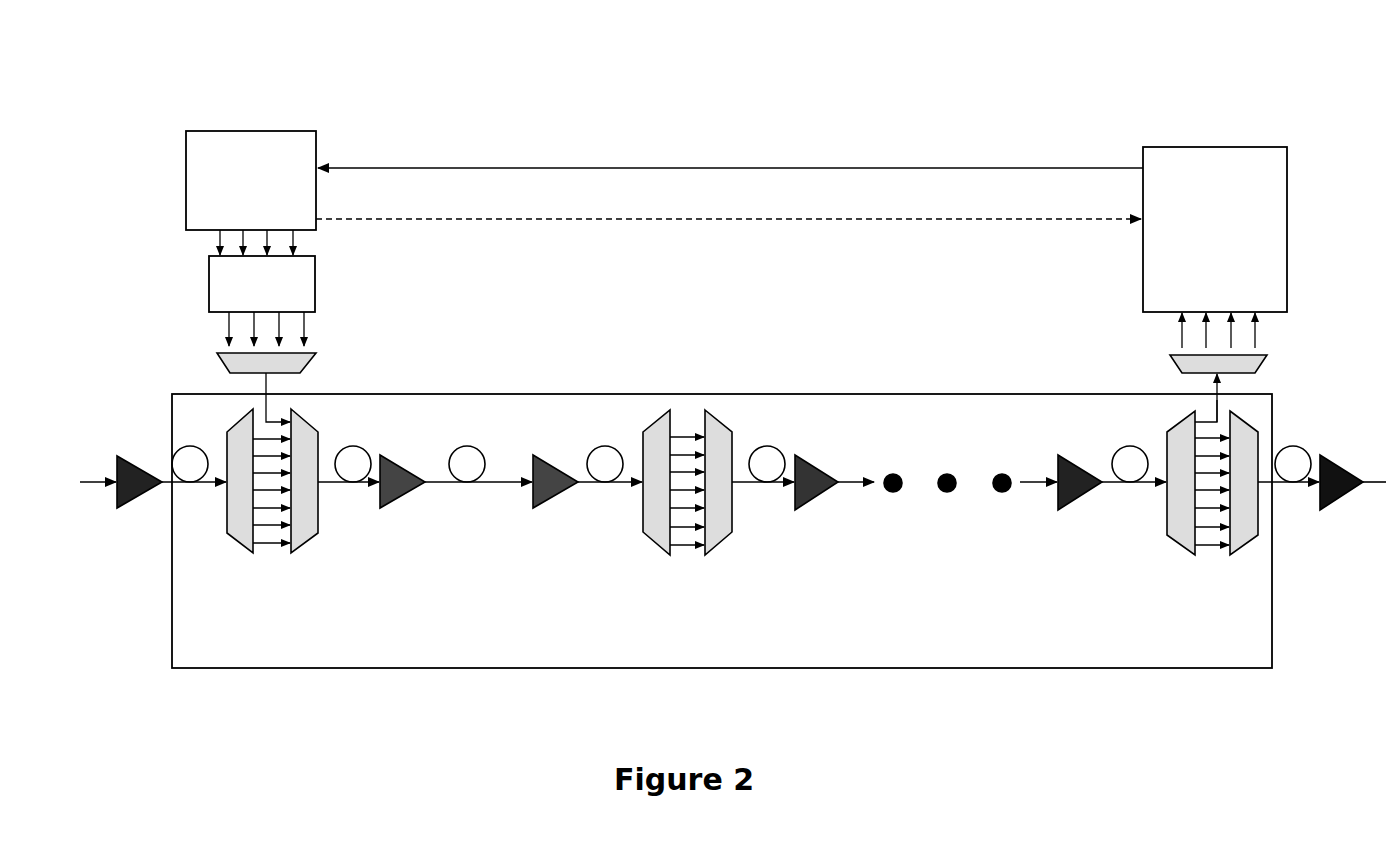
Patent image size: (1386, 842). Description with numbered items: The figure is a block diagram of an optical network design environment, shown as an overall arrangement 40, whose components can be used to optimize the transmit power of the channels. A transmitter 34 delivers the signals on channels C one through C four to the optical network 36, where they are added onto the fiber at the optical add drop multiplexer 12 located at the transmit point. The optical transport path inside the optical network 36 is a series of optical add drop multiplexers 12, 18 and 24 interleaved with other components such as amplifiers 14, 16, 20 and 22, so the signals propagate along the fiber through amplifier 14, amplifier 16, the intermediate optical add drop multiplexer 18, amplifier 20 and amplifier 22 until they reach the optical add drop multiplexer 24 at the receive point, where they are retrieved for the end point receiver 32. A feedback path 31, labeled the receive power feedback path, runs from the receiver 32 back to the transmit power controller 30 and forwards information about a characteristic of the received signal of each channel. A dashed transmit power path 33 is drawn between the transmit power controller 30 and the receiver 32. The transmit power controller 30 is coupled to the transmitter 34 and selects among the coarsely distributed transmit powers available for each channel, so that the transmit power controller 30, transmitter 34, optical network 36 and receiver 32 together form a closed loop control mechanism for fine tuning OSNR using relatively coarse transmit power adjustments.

The optical add drop multiplexer 12 is at (298, 553).
The amplifier 14 is at (393, 503).
The amplifier 16 is at (548, 503).
The optical add drop multiplexer 18 is at (710, 555).
The amplifier 20 is at (813, 503).
The amplifier 22 is at (1082, 502).
The optical add drop multiplexer 24 is at (1240, 555).
The transmit power controller 30 is at (186, 155).
The feedback path 31 is at (953, 168).
The receiver 32 is at (1208, 147).
The transmit power path 33 is at (962, 219).
The transmitter 34 is at (209, 303).
The optical network 36 is at (677, 668).
The optical communication system 40 is at (528, 80).